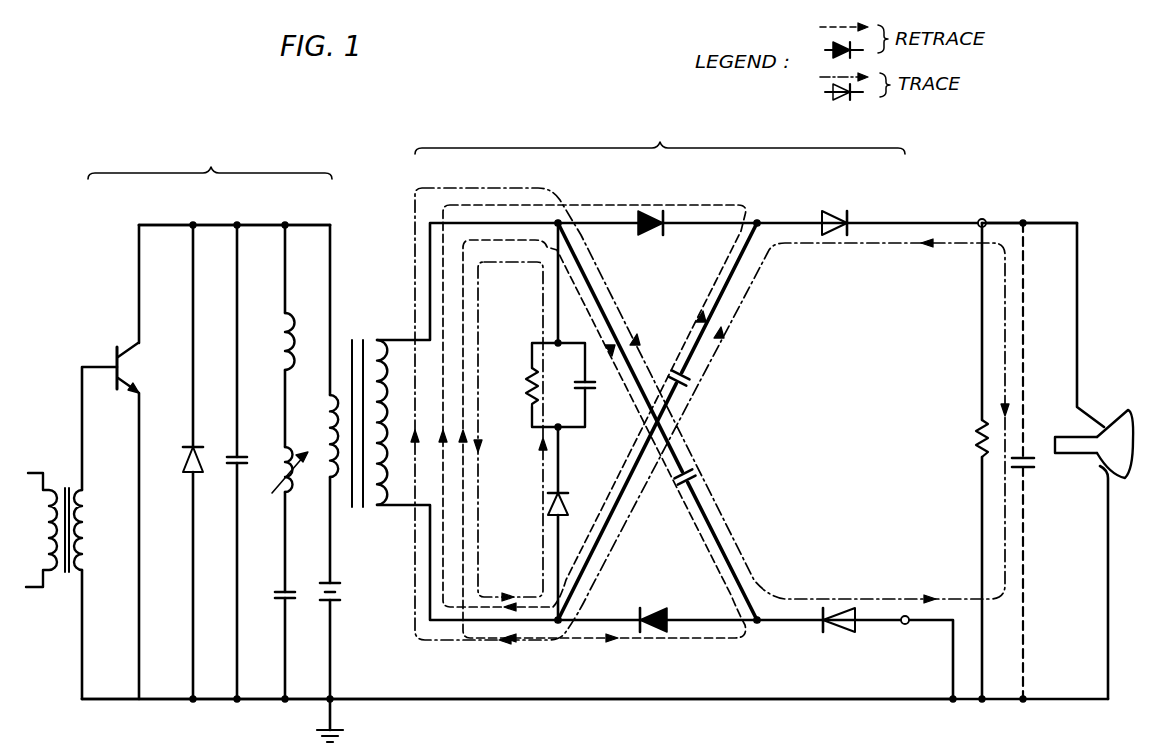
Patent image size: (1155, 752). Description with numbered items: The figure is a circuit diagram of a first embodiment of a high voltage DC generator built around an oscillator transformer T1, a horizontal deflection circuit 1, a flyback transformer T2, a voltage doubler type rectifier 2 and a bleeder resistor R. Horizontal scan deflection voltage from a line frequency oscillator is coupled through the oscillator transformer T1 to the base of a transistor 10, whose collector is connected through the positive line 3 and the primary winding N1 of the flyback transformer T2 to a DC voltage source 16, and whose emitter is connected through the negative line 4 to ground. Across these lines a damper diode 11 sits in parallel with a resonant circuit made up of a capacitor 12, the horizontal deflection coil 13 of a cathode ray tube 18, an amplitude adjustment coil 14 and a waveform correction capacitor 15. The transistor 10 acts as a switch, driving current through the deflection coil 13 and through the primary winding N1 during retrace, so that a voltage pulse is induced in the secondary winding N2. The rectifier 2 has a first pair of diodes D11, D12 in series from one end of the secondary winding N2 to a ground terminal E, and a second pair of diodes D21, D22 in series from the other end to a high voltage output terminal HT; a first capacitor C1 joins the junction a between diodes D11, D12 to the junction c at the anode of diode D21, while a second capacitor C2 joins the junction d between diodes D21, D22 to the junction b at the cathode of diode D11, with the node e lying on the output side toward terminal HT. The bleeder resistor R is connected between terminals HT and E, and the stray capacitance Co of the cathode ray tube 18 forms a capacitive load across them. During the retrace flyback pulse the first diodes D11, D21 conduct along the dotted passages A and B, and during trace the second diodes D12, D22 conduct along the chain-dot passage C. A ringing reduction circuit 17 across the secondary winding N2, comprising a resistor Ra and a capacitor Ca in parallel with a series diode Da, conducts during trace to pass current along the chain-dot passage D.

The horizontal deflection circuit 1 is at (595, 419).
The rectifier 2 is at (759, 409).
The positive line 3 is at (224, 224).
The negative line 4 is at (163, 699).
The transistor 10 is at (113, 358).
The damper diode 11 is at (185, 459).
The capacitor 12 is at (230, 458).
The horizontal deflection coil 13 is at (284, 343).
The amplitude adjustment coil 14 is at (280, 519).
The waveform correction capacitor 15 is at (282, 592).
The DC voltage source 16 is at (341, 596).
The ringing reduction circuit 17 is at (528, 358).
The cathode ray tube 18 is at (1116, 426).
The oscillator transformer T1 is at (66, 444).
The flyback transformer T2 is at (383, 311).
The primary winding N1 is at (330, 478).
The secondary winding N2 is at (379, 507).
The first diode of second pair D21 is at (655, 237).
The second diode of second pair D22 is at (822, 240).
The first diode of first pair D11 is at (647, 610).
The second diode of first pair D12 is at (838, 612).
The first capacitor C1 is at (700, 475).
The second capacitor C2 is at (699, 377).
The resistor Ra is at (530, 404).
The capacitor Ca is at (590, 394).
The diode Da is at (562, 492).
The bleeder resistor R is at (976, 441).
The stray capacitance Co is at (1030, 470).
The high voltage output terminal HT is at (988, 219).
The ground terminal E is at (905, 625).
The junction of diodes D11 and D12 a is at (760, 622).
The junction at cathode of diode D11 b is at (562, 622).
The junction at anode of diode D21 c is at (560, 221).
The junction of diodes D21 and D22 d is at (760, 221).
The junction e is at (980, 219).
The closed passage (dotted line) A is at (527, 648).
The closed passage (dotted line) B is at (487, 610).
The closed passage (chain-dot line) C is at (447, 651).
The passage (chain-dot line) D is at (495, 595).